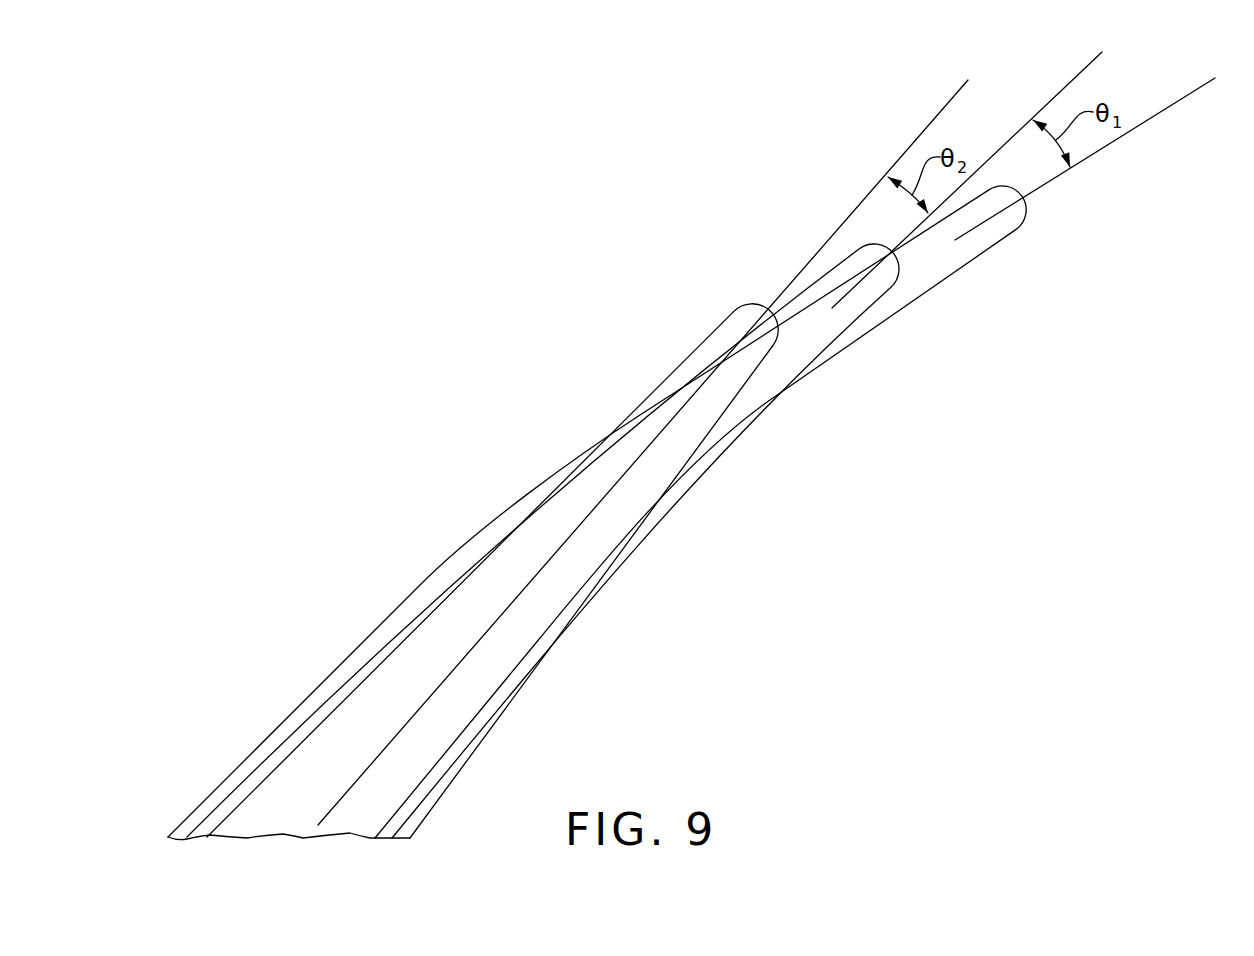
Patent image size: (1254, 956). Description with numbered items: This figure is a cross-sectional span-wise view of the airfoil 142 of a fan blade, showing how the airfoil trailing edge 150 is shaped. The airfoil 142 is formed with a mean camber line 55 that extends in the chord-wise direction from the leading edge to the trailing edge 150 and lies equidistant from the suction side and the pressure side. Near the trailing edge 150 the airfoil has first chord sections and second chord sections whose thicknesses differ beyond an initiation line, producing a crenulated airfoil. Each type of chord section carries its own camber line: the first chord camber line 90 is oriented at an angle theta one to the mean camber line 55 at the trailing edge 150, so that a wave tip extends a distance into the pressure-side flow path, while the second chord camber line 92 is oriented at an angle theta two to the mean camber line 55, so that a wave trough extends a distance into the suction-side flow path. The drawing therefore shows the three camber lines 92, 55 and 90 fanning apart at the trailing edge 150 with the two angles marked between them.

The airfoil 142 is at (712, 150).
The airfoil trailing edge 150 is at (838, 168).
The second chord camber line 92 is at (937, 115).
The mean camber line 55 is at (1073, 78).
The first chord camber line 90 is at (1193, 91).